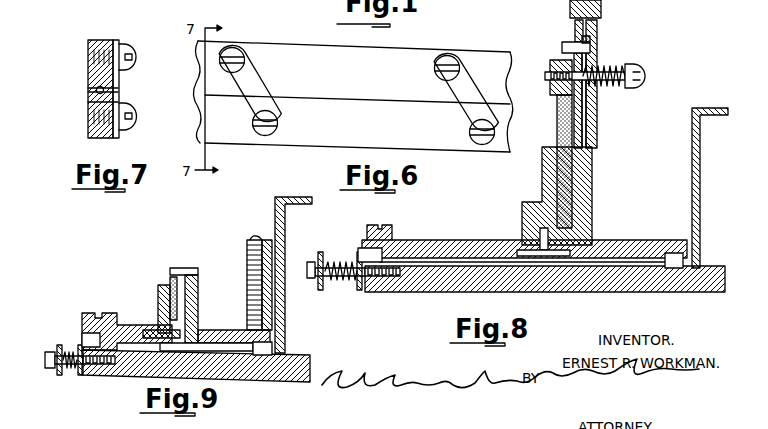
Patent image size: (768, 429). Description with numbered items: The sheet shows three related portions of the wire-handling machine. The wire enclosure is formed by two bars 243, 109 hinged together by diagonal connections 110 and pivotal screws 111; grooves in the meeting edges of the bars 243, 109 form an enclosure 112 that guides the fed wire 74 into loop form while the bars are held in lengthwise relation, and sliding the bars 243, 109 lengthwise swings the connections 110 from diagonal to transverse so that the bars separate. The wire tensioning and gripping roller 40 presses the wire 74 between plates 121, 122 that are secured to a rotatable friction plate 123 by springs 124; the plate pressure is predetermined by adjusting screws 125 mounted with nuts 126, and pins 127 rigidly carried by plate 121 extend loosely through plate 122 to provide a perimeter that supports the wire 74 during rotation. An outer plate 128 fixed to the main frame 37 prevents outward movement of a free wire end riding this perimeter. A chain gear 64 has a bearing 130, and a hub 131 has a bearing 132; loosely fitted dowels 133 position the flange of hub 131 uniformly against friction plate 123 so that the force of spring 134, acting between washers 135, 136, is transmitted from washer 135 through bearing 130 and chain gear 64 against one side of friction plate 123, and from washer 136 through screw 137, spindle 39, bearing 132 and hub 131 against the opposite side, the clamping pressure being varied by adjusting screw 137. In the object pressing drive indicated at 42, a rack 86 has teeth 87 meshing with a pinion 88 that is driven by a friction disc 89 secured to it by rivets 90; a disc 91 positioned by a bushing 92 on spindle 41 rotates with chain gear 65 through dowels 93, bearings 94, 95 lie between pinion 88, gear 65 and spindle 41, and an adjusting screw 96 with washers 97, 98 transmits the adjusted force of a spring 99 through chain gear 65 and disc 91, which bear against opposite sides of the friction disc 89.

In FIG. 7, the bar 243 is at (90, 62).
In FIG. 6, the bar 243 is at (305, 53).
In FIG. 7, the enclosure 112 is at (97, 90).
In FIG. 7, the bar 109 is at (88, 104).
In FIG. 6, the bar 109 is at (236, 143).
In FIG. 7, the connections 110 is at (122, 90).
In FIG. 6, the connections 110 is at (282, 108).
In FIG. 7, the pivotal screws 111 is at (133, 58).
In FIG. 6, the pivotal screws 111 is at (432, 76).
In FIG. 8, the main frame 37 is at (701, 180).
In FIG. 9, the main frame 37 is at (272, 212).
In FIG. 8, the spindle 39 is at (652, 292).
In FIG. 8, the wire tensioning and gripping roller 40 is at (610, 128).
In FIG. 9, the spindle 41 is at (236, 378).
In FIG. 9, the adjusting assembly 42 is at (142, 270).
In FIG. 8, the chain gear 64 is at (394, 230).
In FIG. 9, the chain gear 65 is at (97, 318).
In FIG. 8, the wire 74 is at (592, 40).
In FIG. 9, the rack 86 is at (252, 240).
In FIG. 9, the teeth 87 is at (247, 262).
In FIG. 9, the pinion 88 is at (233, 330).
In FIG. 9, the friction disc 89 is at (172, 276).
In FIG. 9, the rivets 90 is at (186, 268).
In FIG. 9, the disc 91 is at (182, 300).
In FIG. 9, the bushing 92 is at (222, 345).
In FIG. 9, the pins or dowels 93 is at (158, 330).
In FIG. 9, the bearing 94 is at (274, 344).
In FIG. 9, the bearing 95 is at (82, 338).
In FIG. 9, the adjusting screw 96 is at (45, 360).
In FIG. 9, the washer 97 is at (58, 345).
In FIG. 9, the washer 98 is at (81, 377).
In FIG. 9, the spring 99 is at (70, 375).
In FIG. 8, the plate 121 is at (598, 135).
In FIG. 8, the plate 122 is at (576, 30).
In FIG. 8, the friction plate 123 is at (576, 178).
In FIG. 8, the springs 124 is at (620, 88).
In FIG. 8, the adjusting screws 125 is at (640, 70).
In FIG. 8, the nuts 126 is at (548, 78).
In FIG. 8, the pins 127 is at (562, 47).
In FIG. 8, the outer plate 128 is at (602, 9).
In FIG. 8, the bearing 130 is at (365, 250).
In FIG. 8, the hub 131 is at (624, 246).
In FIG. 8, the bearing 132 is at (684, 262).
In FIG. 8, the dowels 133 is at (518, 249).
In FIG. 8, the spring 134 is at (340, 262).
In FIG. 8, the washer 135 is at (360, 292).
In FIG. 8, the washer 136 is at (322, 292).
In FIG. 8, the screw 137 is at (312, 280).